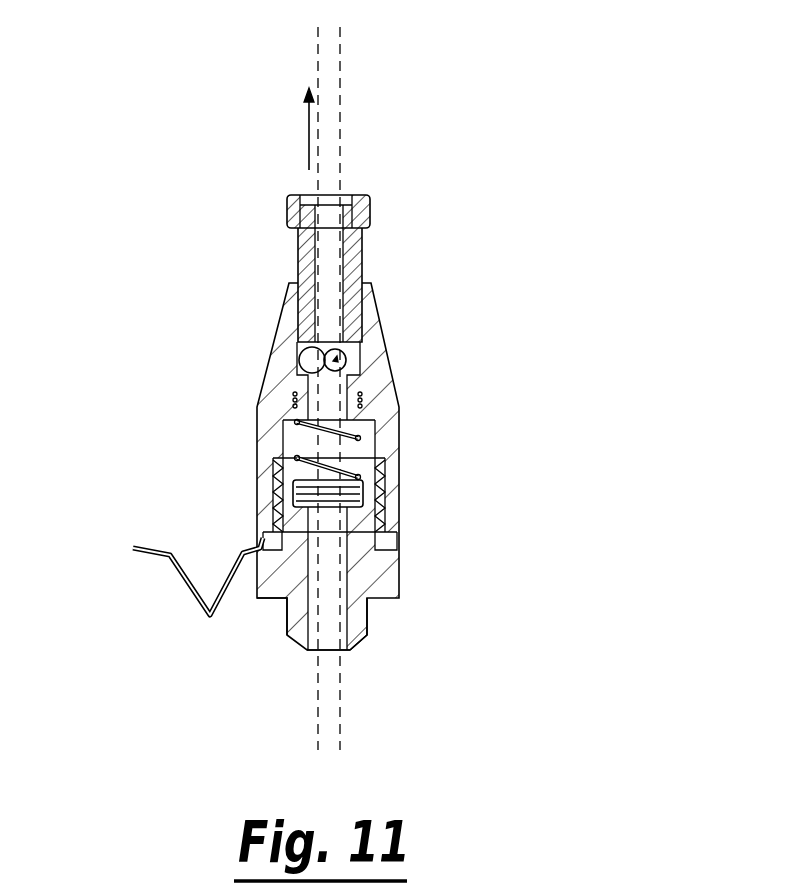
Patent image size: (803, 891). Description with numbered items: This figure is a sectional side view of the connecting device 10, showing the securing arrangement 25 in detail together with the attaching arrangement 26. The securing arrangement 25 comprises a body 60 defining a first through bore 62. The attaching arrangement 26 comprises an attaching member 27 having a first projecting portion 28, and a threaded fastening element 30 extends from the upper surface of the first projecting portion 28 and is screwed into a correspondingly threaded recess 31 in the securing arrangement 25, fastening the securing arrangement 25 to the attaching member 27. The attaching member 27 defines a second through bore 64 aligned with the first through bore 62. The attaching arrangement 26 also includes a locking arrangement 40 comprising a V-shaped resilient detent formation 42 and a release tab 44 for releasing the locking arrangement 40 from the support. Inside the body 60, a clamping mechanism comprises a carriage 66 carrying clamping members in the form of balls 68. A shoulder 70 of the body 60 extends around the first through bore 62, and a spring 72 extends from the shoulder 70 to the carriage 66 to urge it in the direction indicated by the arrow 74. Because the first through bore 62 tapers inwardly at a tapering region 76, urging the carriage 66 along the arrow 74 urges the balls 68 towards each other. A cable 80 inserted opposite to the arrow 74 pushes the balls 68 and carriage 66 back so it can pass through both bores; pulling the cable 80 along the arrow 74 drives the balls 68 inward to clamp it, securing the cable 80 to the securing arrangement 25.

The connecting device 10 is at (230, 233).
The securing arrangement 25 is at (392, 335).
The attaching arrangement 26 is at (275, 618).
The attaching member 27 is at (367, 647).
The first projecting portion 28 is at (390, 582).
The threaded fastening element 30 is at (373, 477).
The threaded recess 31 is at (380, 560).
The locking arrangement 40 is at (153, 540).
The detent formation 42 is at (193, 598).
The release tab 44 is at (143, 558).
The body 60 is at (378, 375).
The first through bore 62 is at (372, 293).
The second through bore 64 is at (306, 650).
The carriage 66 is at (305, 313).
The balls 68 is at (305, 360).
The shoulder 70 is at (337, 650).
The spring 72 is at (373, 455).
The arrow 74 is at (309, 150).
The tapering region 76 is at (373, 437).
The cable 80 is at (341, 63).